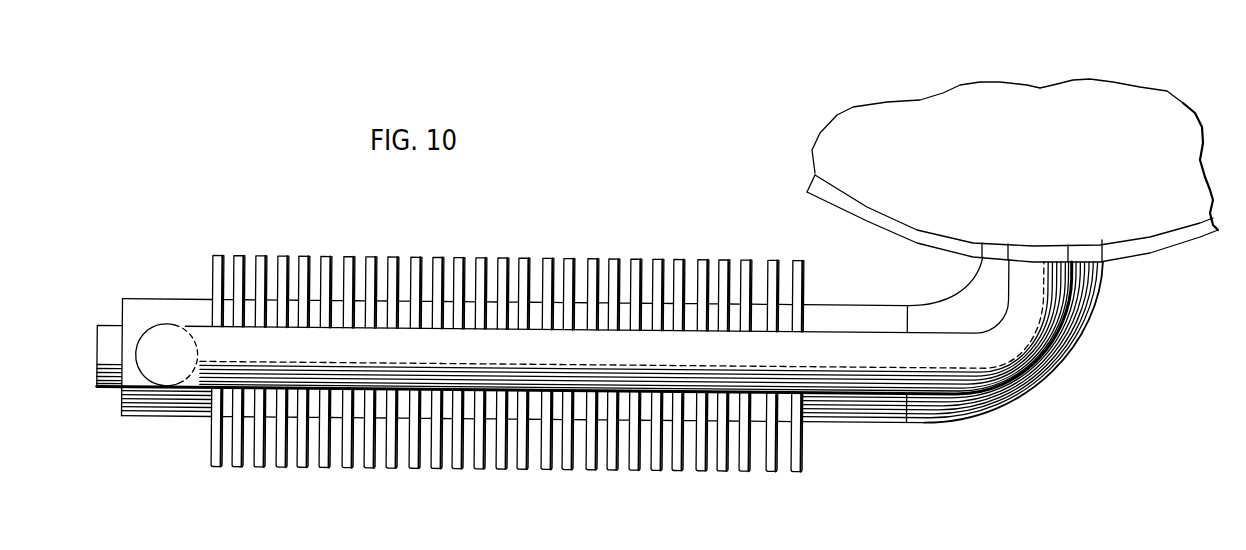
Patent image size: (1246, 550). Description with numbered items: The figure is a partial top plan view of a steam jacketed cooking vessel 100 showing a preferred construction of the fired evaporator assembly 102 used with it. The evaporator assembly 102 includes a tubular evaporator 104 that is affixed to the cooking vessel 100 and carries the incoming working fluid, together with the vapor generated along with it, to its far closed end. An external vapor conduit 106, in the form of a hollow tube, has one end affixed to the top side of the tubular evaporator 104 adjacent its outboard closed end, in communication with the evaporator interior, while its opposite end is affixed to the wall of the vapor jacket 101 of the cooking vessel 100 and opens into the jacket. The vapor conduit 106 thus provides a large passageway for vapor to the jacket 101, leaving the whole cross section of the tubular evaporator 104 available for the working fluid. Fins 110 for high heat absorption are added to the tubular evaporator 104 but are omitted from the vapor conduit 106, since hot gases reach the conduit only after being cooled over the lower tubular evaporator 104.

The cooking vessel 100 is at (1175, 80).
The vapor jacket 101 is at (1167, 236).
The evaporator assembly 102 is at (588, 244).
The tubular evaporator 104 is at (135, 317).
The vapor conduit 106 is at (213, 352).
The fins 110 is at (738, 253).